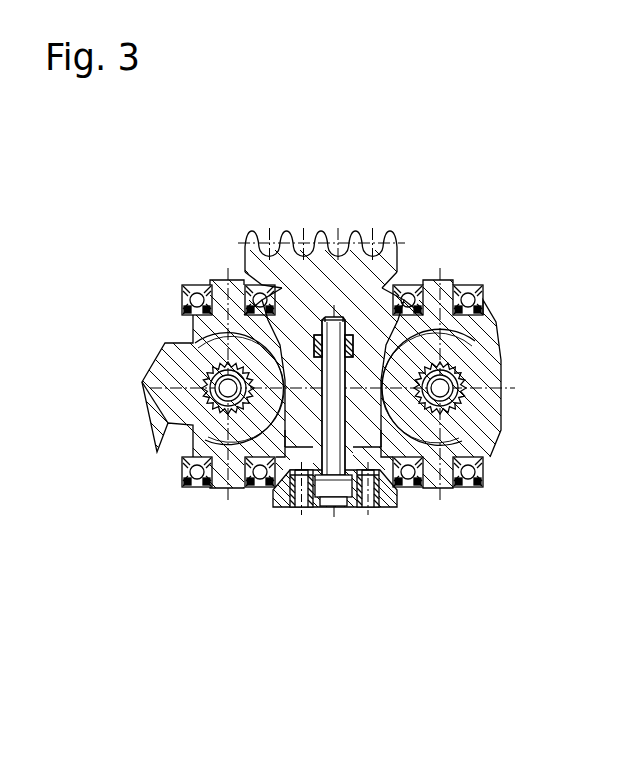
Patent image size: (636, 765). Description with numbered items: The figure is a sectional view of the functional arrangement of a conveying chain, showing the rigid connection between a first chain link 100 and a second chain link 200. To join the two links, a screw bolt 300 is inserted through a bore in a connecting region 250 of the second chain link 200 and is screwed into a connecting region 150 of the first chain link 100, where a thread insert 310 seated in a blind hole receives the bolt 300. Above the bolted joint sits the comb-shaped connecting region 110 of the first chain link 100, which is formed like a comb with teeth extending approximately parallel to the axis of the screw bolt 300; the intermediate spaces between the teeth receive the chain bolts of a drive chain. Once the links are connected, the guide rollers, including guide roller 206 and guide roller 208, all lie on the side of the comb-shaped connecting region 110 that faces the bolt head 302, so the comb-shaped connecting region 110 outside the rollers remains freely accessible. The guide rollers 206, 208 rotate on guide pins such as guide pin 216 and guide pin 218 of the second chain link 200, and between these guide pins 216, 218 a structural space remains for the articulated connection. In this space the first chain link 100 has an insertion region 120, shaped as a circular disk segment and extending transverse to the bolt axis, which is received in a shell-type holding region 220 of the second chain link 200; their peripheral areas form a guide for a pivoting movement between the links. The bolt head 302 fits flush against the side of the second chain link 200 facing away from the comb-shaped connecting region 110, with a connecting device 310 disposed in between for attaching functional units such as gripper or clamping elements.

The first chain link 100 is at (436, 244).
The comb-shaped connecting region 110 is at (385, 210).
The connecting region 150 is at (307, 302).
The insertion region 120 is at (473, 372).
The second chain link 200 is at (232, 500).
The connecting region 250 is at (297, 432).
The guide pin 218 is at (212, 287).
The guide roller 208 is at (185, 291).
The guide roller 206 is at (180, 480).
The guide pin 216 is at (220, 488).
The holding region 220 is at (388, 480).
The thread insert 310 is at (350, 346).
The screw bolt 300 is at (337, 492).
The bolt head 302 is at (323, 485).